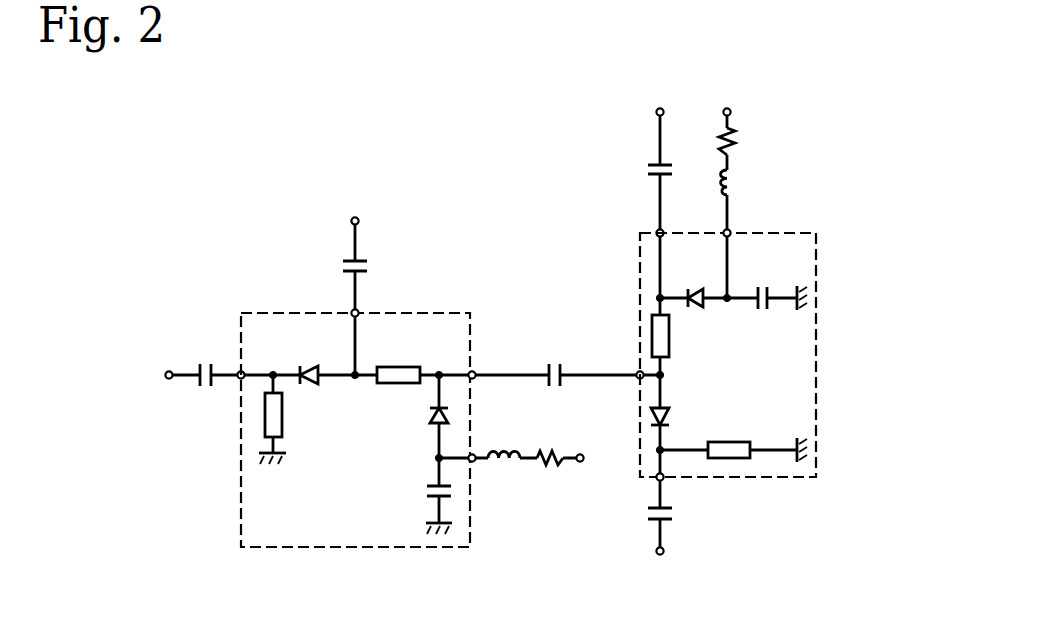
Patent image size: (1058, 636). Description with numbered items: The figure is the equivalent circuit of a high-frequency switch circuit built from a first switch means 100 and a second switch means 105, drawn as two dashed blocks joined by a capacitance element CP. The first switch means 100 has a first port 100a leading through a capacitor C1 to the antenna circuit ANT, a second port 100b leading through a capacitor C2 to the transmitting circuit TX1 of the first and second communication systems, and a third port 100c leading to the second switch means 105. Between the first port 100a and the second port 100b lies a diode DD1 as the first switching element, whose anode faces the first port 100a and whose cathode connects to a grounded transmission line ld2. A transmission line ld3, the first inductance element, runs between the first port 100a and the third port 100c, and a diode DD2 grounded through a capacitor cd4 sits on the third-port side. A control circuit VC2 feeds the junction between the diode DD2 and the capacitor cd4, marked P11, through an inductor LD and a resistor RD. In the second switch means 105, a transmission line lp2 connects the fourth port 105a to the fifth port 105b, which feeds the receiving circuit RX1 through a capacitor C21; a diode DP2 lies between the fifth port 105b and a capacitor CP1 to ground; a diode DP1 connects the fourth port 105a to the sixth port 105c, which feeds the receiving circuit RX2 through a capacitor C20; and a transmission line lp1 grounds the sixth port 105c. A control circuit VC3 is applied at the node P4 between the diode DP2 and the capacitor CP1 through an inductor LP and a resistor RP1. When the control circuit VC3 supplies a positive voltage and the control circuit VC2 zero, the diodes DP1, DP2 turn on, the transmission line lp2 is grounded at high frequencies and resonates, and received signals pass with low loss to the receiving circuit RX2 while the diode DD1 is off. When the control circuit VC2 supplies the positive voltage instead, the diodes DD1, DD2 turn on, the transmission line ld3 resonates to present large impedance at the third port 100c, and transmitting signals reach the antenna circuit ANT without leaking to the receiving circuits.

The transmitting circuit TX1 is at (124, 376).
The antenna circuit ANT is at (354, 206).
The receiving circuit RX1 is at (660, 99).
The receiving circuit RX2 is at (662, 568).
The control circuit VC2 is at (603, 459).
The control circuit VC3 is at (728, 99).
The capacitor C2 is at (212, 362).
The capacitor C1 is at (341, 268).
The first switch means 100 is at (440, 313).
The first port 100a is at (358, 311).
The second port 100b is at (239, 379).
The third port 100c is at (474, 372).
The diode DD1 is at (316, 351).
The diode DD2 is at (429, 416).
The transmission line ld3 is at (403, 366).
The transmission line ld2 is at (283, 413).
The control port P11 is at (475, 455).
The capacitor cd4 is at (425, 492).
The inductor LD is at (504, 464).
The resistor RD is at (553, 466).
The capacitance element CP is at (556, 362).
The second switch means 105 is at (800, 232).
The fourth port 105a is at (637, 371).
The fifth port 105b is at (657, 230).
The sixth port 105c is at (664, 479).
The capacitor C21 is at (646, 170).
The capacitor C20 is at (646, 514).
The control port P4 is at (724, 230).
The resistor RP1 is at (737, 141).
The inductor LP is at (735, 184).
The diode DP1 is at (664, 410).
The diode DP2 is at (694, 288).
The capacitor CP1 is at (762, 286).
The transmission line lp1 is at (737, 441).
The transmission line lp2 is at (670, 340).